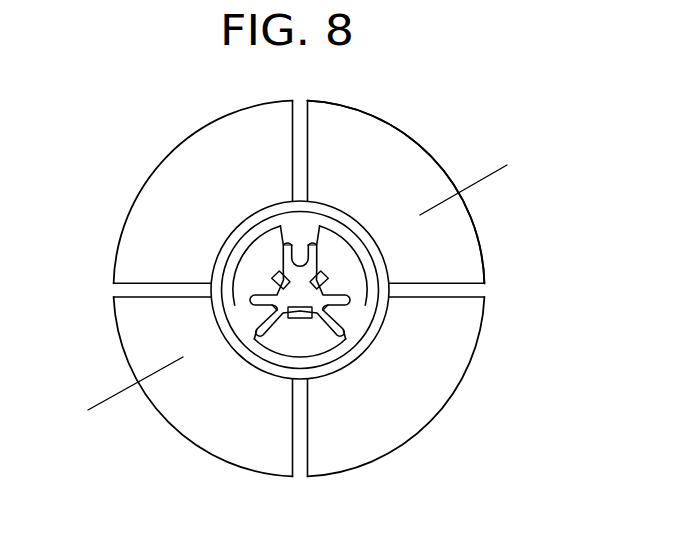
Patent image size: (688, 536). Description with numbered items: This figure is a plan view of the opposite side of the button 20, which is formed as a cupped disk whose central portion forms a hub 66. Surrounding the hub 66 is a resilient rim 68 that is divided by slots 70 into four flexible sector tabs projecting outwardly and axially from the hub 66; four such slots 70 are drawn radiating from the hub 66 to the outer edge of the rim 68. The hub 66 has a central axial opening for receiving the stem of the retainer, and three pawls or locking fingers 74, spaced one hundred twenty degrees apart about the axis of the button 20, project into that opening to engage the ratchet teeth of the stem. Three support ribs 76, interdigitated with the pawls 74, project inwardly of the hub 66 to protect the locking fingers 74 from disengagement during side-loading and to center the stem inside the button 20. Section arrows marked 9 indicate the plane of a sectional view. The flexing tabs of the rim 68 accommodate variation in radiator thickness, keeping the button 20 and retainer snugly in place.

The button 20 is at (474, 394).
The hub 66 is at (342, 362).
The resilient rim 68 is at (197, 150).
The slots 70 is at (300, 103).
The pawls or locking fingers 74 is at (283, 275).
The support ribs 76 is at (297, 236).
The section line 9- 9 is at (490, 155).